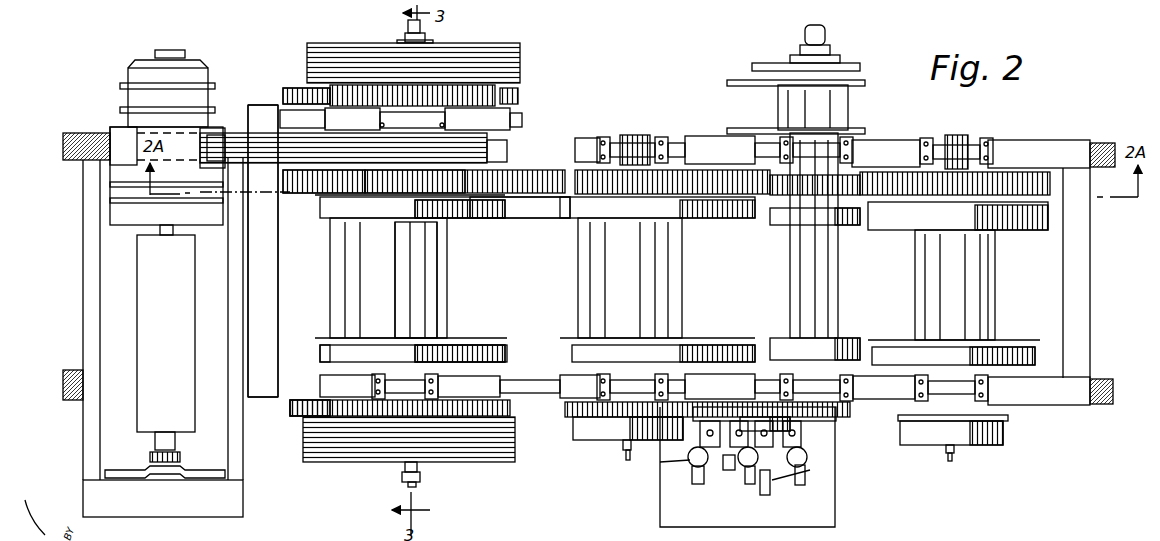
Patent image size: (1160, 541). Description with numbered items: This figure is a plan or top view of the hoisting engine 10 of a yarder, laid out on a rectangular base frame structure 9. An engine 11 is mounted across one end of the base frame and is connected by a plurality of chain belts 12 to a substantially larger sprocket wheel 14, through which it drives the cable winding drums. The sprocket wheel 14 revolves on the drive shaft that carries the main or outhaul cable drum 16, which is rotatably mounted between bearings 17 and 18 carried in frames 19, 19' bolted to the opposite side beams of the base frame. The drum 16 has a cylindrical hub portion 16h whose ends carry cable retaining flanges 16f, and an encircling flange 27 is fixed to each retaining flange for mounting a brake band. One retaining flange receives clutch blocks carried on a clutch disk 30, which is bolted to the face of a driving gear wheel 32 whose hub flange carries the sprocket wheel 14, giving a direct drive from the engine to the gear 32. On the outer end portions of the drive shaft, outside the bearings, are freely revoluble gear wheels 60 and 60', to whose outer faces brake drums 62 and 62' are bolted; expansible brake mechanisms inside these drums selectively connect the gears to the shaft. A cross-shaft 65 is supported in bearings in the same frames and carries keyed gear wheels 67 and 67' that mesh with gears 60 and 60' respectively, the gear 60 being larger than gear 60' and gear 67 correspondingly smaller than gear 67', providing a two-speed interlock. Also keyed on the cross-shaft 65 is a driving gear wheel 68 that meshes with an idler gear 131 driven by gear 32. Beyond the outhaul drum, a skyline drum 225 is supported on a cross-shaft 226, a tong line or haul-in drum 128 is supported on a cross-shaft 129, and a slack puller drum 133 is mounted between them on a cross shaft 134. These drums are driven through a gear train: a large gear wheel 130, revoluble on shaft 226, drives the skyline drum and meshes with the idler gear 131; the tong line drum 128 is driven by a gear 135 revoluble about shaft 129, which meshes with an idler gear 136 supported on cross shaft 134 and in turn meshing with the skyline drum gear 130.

The base frame structure 9 is at (1042, 142).
The hoisting engine 10 is at (602, 136).
The engine 11 is at (145, 268).
The chain belts 12 is at (243, 128).
The sprocket wheel 14 is at (462, 120).
The outhaul cable drum 16 is at (470, 300).
The cable retaining flanges 16f is at (372, 198).
The cylindrical hub portion 16h is at (456, 322).
The bearing 17 is at (420, 400).
The bearing 18 is at (415, 118).
The frame 19 is at (576, 449).
The frame 19' is at (528, 76).
The encircling flange 27 is at (480, 210).
The clutch disk 30 is at (478, 196).
The driving gear wheel 32 is at (375, 185).
The gear wheel 60 is at (317, 456).
The gear wheel 60' is at (389, 57).
The brake drum 62 is at (409, 464).
The brake drum 62' is at (413, 46).
The cross-shaft 65 is at (292, 294).
The gear wheel 67 is at (291, 430).
The gear wheel 67' is at (285, 70).
The driving gear wheel 68 is at (290, 206).
The tong line drum 128 is at (996, 282).
The cross-shaft 129 is at (962, 138).
The gear wheel 130 is at (665, 185).
The idler gear 131 is at (490, 176).
The slack puller drum 133 is at (805, 292).
The cross shaft 134 is at (845, 137).
The gear 135 is at (1045, 180).
The idler gear 136 is at (855, 180).
The skyline drum 225 is at (683, 264).
The cross-shaft 226 is at (635, 136).